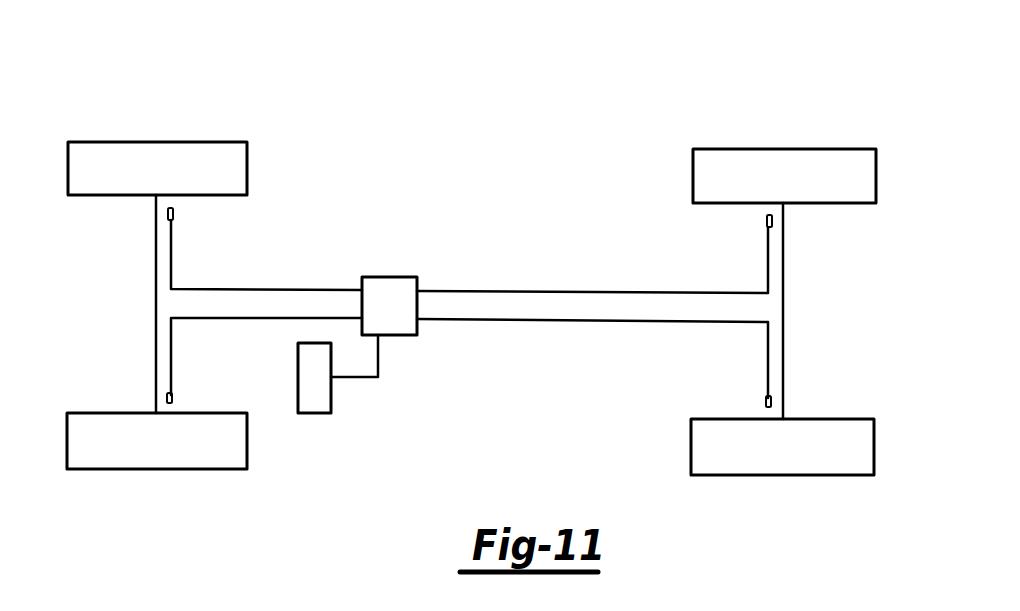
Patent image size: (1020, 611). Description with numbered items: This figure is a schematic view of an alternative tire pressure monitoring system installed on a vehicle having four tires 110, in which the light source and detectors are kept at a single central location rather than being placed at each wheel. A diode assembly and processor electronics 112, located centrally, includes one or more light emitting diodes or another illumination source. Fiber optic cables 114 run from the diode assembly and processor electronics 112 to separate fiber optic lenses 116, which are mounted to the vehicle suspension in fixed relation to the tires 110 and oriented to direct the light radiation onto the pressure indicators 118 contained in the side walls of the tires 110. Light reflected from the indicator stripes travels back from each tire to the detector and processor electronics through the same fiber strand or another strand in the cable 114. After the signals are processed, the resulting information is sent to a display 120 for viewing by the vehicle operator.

The tires 110 is at (115, 156).
The diode assembly and processor electronics 112 is at (397, 286).
The fiber optic cables 114 is at (265, 289).
The fiber optic lenses 116 is at (175, 215).
The pressure indicators 118 is at (163, 194).
The display 120 is at (325, 395).